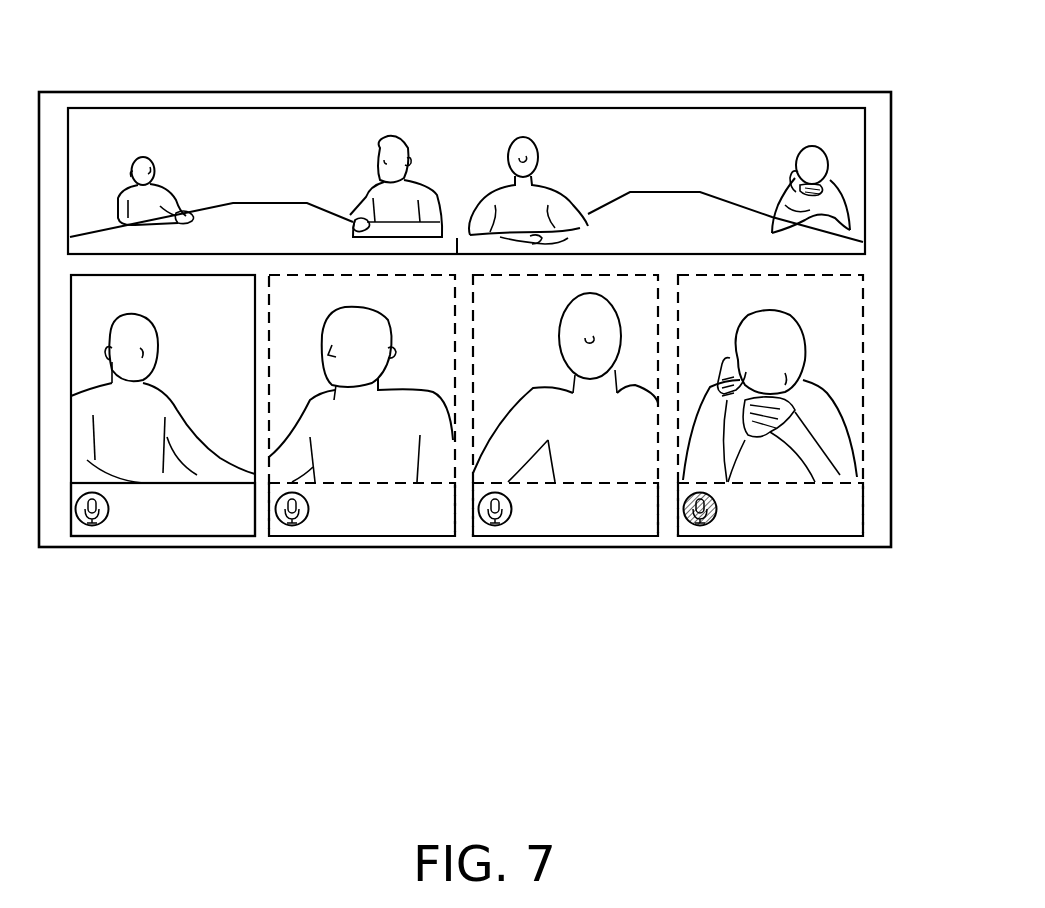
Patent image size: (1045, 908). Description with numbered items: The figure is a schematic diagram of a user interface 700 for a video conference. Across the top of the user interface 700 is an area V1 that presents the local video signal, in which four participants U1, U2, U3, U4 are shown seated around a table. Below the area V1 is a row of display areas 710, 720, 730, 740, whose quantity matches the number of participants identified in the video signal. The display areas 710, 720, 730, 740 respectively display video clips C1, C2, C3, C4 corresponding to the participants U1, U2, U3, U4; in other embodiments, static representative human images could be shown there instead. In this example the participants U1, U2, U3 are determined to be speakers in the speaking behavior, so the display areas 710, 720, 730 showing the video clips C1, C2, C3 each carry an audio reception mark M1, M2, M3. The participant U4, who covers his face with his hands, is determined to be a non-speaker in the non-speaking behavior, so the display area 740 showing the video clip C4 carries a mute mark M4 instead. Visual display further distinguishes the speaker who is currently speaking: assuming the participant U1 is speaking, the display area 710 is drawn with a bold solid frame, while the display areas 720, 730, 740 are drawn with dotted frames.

The user interface 700 is at (833, 93).
The area V1 is at (863, 190).
The participant U1 is at (143, 158).
The participant U2 is at (395, 152).
The participant U3 is at (523, 145).
The participant U4 is at (803, 155).
The display area 710 is at (163, 459).
The display area 720 is at (362, 459).
The display area 730 is at (565, 459).
The display area 740 is at (770, 459).
The audio reception mark M1 is at (90, 522).
The audio reception mark M2 is at (290, 522).
The audio reception mark M3 is at (493, 522).
The mute mark M4 is at (698, 522).
The video clip C1 is at (222, 483).
The video clip C2 is at (410, 483).
The video clip C3 is at (613, 483).
The video clip C4 is at (820, 483).